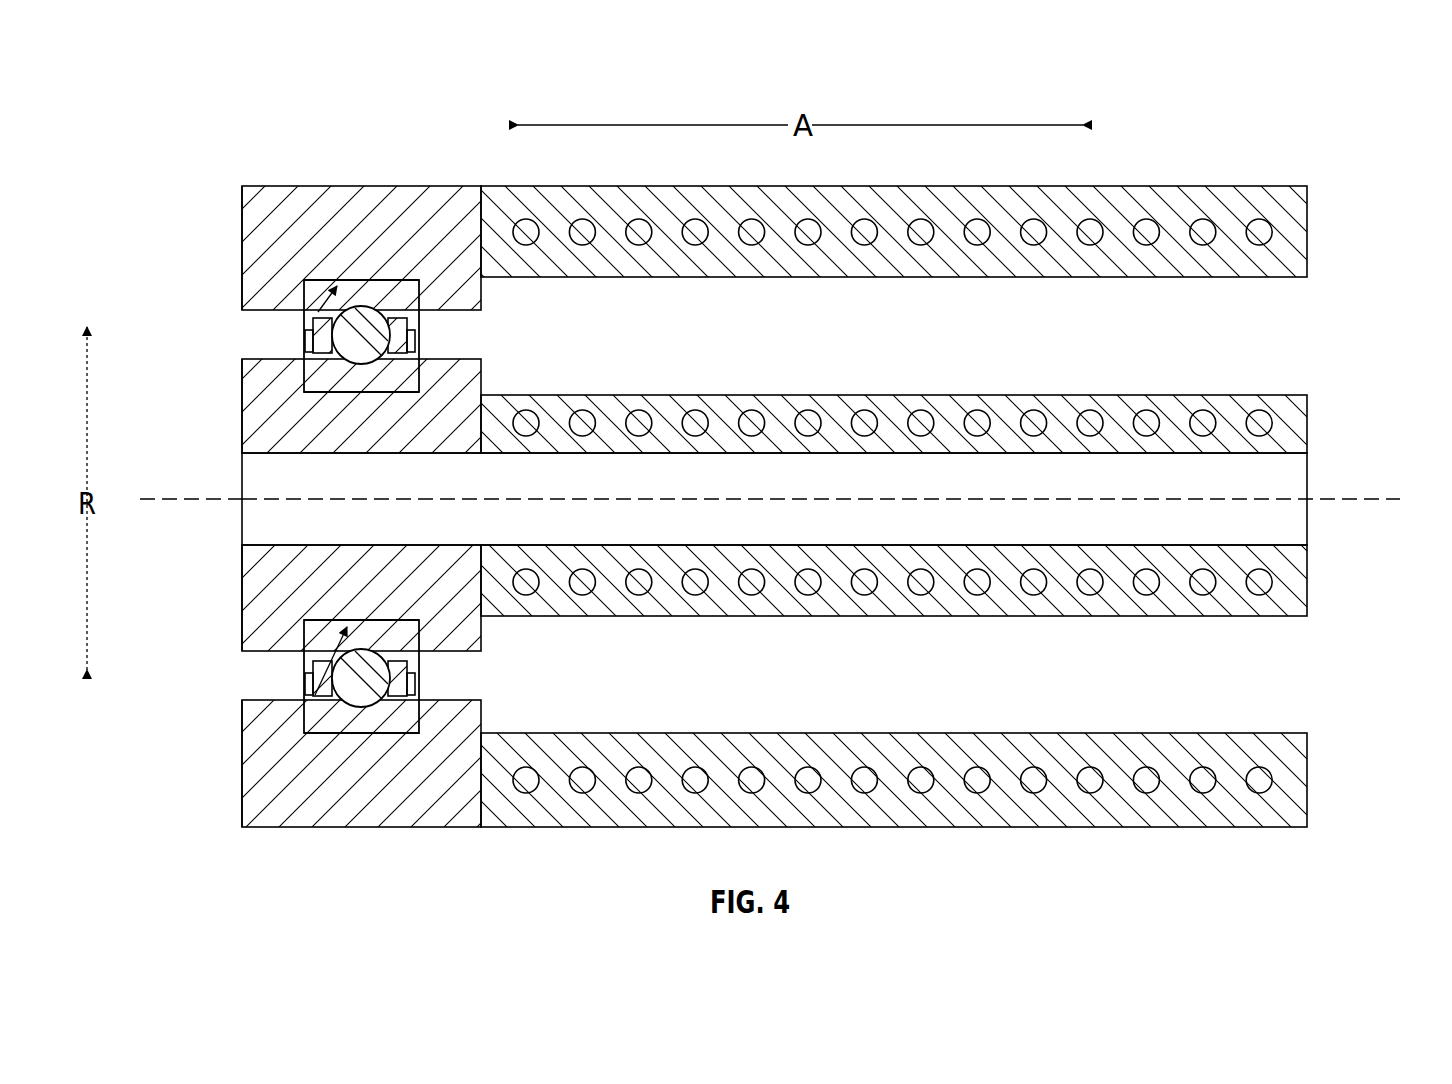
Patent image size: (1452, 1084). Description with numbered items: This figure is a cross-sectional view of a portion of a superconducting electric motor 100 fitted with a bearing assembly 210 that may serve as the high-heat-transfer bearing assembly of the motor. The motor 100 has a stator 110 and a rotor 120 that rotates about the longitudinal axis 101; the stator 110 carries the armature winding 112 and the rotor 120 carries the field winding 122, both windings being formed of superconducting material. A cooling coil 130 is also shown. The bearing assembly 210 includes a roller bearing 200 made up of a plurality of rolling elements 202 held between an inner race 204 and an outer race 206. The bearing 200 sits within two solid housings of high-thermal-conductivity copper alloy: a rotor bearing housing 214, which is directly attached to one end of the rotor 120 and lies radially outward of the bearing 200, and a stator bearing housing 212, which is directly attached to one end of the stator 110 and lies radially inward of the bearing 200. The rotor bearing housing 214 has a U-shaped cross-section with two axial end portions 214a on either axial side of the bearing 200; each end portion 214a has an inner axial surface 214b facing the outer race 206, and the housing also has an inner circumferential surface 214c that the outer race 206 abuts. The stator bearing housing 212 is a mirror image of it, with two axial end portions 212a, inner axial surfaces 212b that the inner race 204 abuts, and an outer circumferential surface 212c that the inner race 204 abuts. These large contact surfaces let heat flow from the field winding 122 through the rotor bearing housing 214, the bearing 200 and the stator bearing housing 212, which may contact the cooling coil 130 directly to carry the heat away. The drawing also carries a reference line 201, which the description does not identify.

The motor 100 is at (1324, 117).
The longitudinal axis 101 is at (1380, 498).
The stator 110 is at (1290, 415).
The armature winding 112 is at (1257, 418).
The rotor 120 is at (1296, 243).
The field winding 122 is at (1258, 222).
The cooling coil 130 is at (1290, 475).
The bearing 200 is at (372, 330).
The radial axis 201 is at (183, 497).
The rolling elements 202 is at (352, 330).
The inner race 204 is at (418, 371).
The outer race 206 is at (422, 291).
The bearing assembly 210 is at (160, 212).
The stator bearing housing 212 is at (260, 447).
The axial end portions 212a is at (252, 393).
The inner axial surface 212b is at (308, 372).
The outer circumferential surface 212c is at (362, 386).
The rotor bearing housing 214 is at (251, 197).
The axial end portions 214a is at (252, 277).
The inner axial surface 214b is at (308, 297).
The inner circumferential surface 214c is at (304, 332).